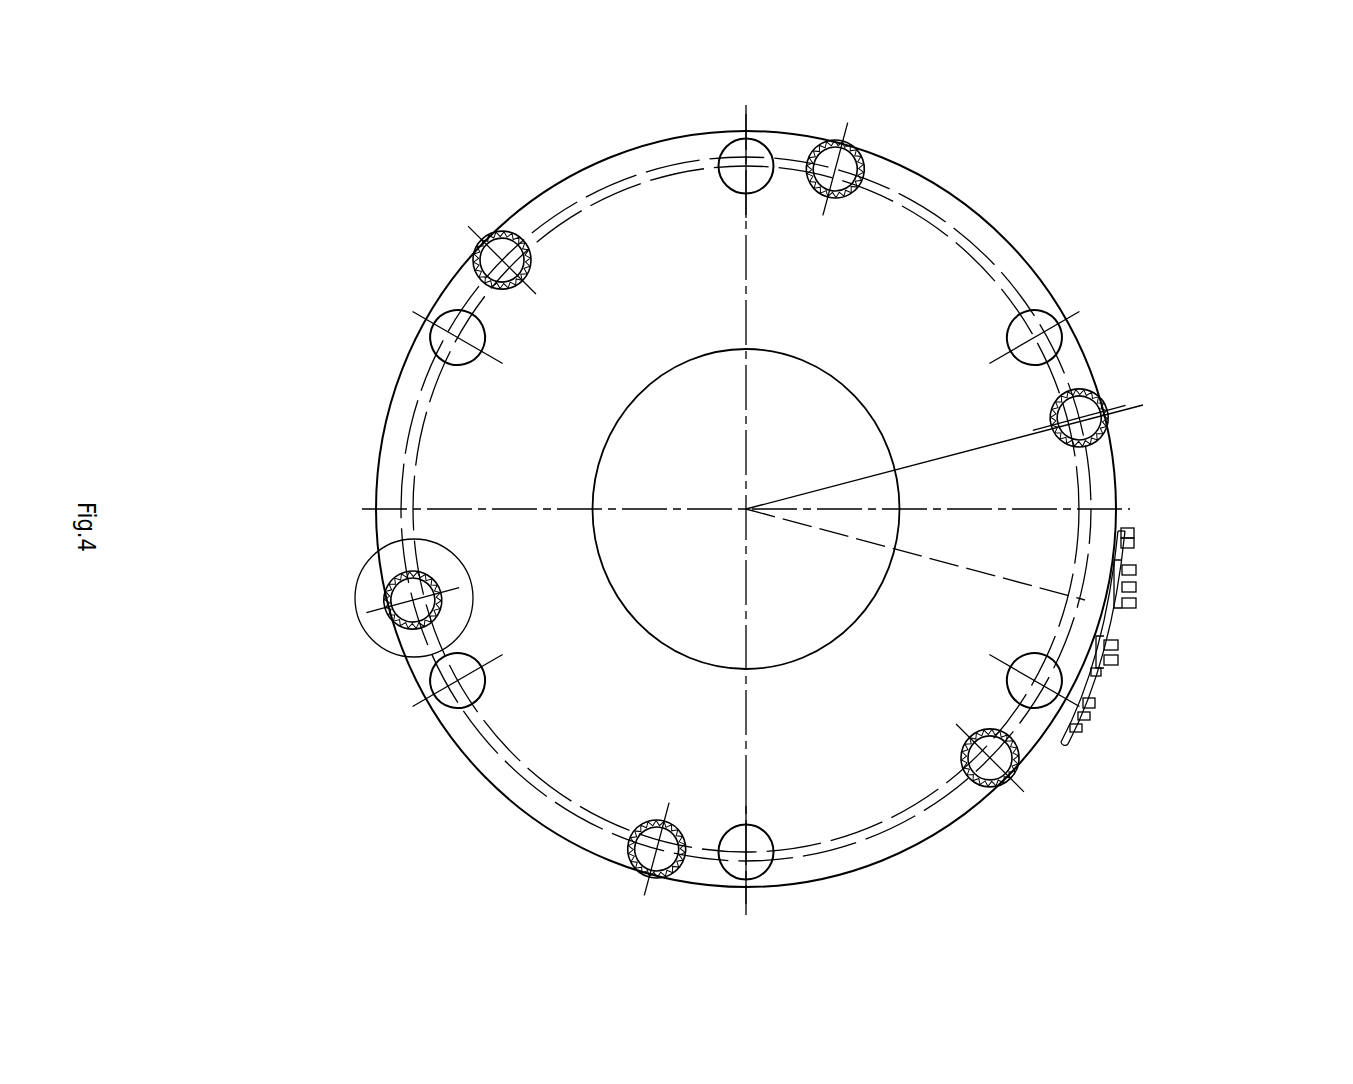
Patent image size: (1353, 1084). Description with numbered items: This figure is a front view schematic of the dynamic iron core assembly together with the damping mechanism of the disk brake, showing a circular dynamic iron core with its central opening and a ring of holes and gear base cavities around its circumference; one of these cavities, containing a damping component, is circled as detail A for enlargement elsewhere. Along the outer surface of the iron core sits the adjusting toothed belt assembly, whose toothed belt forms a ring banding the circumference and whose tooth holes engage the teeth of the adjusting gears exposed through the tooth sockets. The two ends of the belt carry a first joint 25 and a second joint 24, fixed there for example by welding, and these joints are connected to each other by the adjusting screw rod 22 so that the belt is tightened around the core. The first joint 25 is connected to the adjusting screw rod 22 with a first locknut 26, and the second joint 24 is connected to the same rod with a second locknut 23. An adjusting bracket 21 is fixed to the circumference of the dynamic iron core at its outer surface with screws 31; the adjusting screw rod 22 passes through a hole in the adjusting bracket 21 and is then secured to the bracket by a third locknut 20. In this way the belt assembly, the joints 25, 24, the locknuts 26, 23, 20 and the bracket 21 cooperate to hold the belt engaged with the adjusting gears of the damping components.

The third locknut 20 is at (1137, 603).
The adjusting bracket 21 is at (1131, 548).
The adjusting screw rod 22 is at (1137, 569).
The second locknut 23 is at (1119, 660).
The second joint 24 is at (1099, 672).
The first joint 25 is at (1095, 703).
The first locknut 26 is at (1082, 728).
The screw 31 is at (1133, 533).
The detail A is at (372, 640).